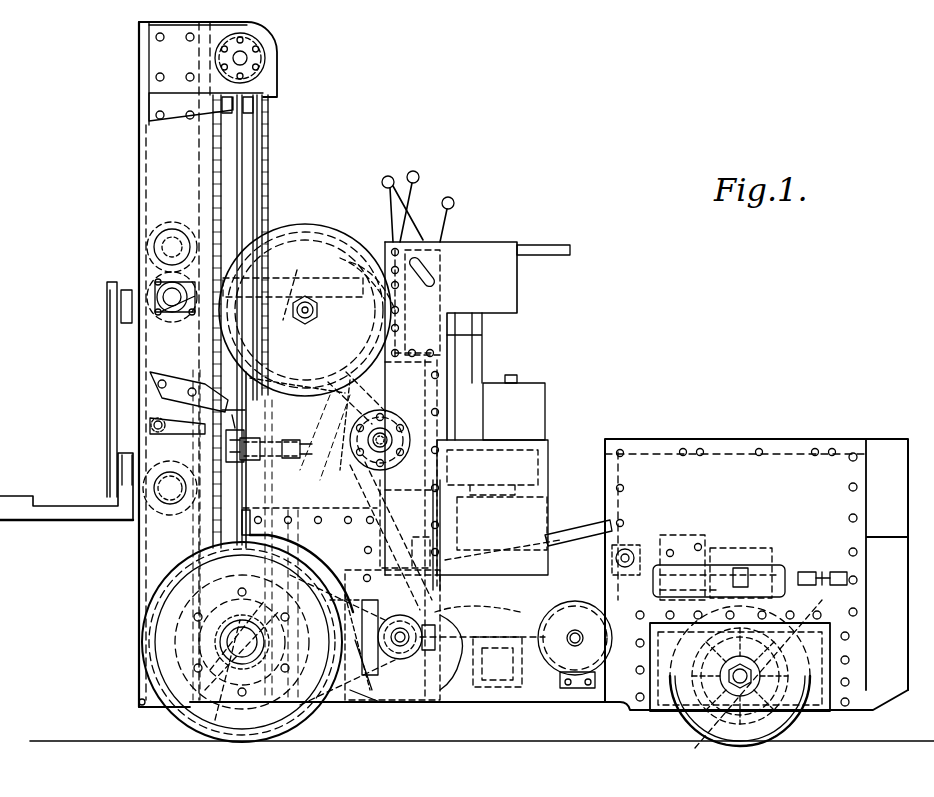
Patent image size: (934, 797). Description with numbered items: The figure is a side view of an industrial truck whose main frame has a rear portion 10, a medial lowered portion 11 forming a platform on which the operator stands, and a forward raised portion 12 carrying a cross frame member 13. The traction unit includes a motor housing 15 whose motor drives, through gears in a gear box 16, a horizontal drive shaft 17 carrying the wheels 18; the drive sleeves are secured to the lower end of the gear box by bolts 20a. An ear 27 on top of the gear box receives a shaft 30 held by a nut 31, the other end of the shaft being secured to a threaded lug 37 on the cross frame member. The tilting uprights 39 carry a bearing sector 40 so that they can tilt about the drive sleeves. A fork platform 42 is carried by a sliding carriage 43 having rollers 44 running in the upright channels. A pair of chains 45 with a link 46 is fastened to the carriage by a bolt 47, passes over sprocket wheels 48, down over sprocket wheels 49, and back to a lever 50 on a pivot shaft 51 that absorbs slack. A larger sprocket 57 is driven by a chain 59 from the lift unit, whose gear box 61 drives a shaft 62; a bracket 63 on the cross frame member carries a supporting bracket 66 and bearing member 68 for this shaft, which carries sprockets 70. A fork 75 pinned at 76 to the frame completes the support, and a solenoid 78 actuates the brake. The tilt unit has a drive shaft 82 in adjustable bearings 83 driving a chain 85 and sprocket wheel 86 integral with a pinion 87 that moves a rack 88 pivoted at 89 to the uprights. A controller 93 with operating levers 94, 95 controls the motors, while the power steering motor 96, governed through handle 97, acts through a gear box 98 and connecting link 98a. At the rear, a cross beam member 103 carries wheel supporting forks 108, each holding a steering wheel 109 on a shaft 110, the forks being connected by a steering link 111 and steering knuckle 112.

The rear portion 10 is at (812, 441).
The medial lowered portion 11 is at (580, 538).
The forward raised portion 12 is at (298, 228).
The cross frame member 13 is at (380, 486).
The motor housing 15 is at (329, 436).
The gear box 16 is at (232, 531).
The drive shaft 17 is at (225, 642).
The wheels 18 is at (185, 718).
The bolts 20a is at (242, 645).
The ear 27 is at (272, 444).
The shaft 30 is at (302, 446).
The nut 31 is at (226, 449).
The threaded lug 37 is at (345, 400).
The uprights 39 is at (140, 152).
The bearing sector 40 is at (215, 740).
The fork platform 42 is at (110, 376).
The carriage 43 is at (117, 336).
The rollers 44 is at (152, 222).
The chains 45 is at (221, 143).
The link 46 is at (234, 414).
The bolt 47 is at (280, 385).
The sprocket wheels 48 is at (272, 50).
The sprocket wheels 49 is at (195, 612).
The lever 50 is at (190, 426).
The pivot shaft 51 is at (150, 402).
The sprocket 57 is at (320, 578).
The chain 59 is at (318, 700).
The gear box 61 is at (495, 553).
The shaft 62 is at (420, 625).
The bracket 63 is at (392, 720).
The supporting bracket 66 is at (452, 700).
The bearing member 68 is at (442, 695).
The sprockets 70 is at (362, 700).
The fork 75 is at (640, 583).
The pin 76 is at (632, 548).
The solenoid 78 is at (505, 690).
The drive shaft 82 is at (362, 466).
The adjustable bearings 83 is at (390, 428).
The chain 85 is at (382, 425).
The sprocket wheel 86 is at (365, 393).
The pinion 87 is at (303, 326).
The rack 88 is at (306, 282).
The pivot 89 is at (160, 285).
The controller 93 is at (345, 252).
The operating lever 94 is at (420, 174).
The operating lever 95 is at (383, 178).
The power steering motor 96 is at (535, 390).
The handle 97 is at (555, 246).
The gear box 98 is at (550, 505).
The connecting link 98a is at (672, 548).
The cross beam member 103 is at (760, 548).
The wheel supporting fork 108 is at (761, 681).
The steering wheel 109 is at (790, 720).
The shaft 110 is at (690, 712).
The steering link 111 is at (850, 568).
The steering knuckle 112 is at (745, 580).